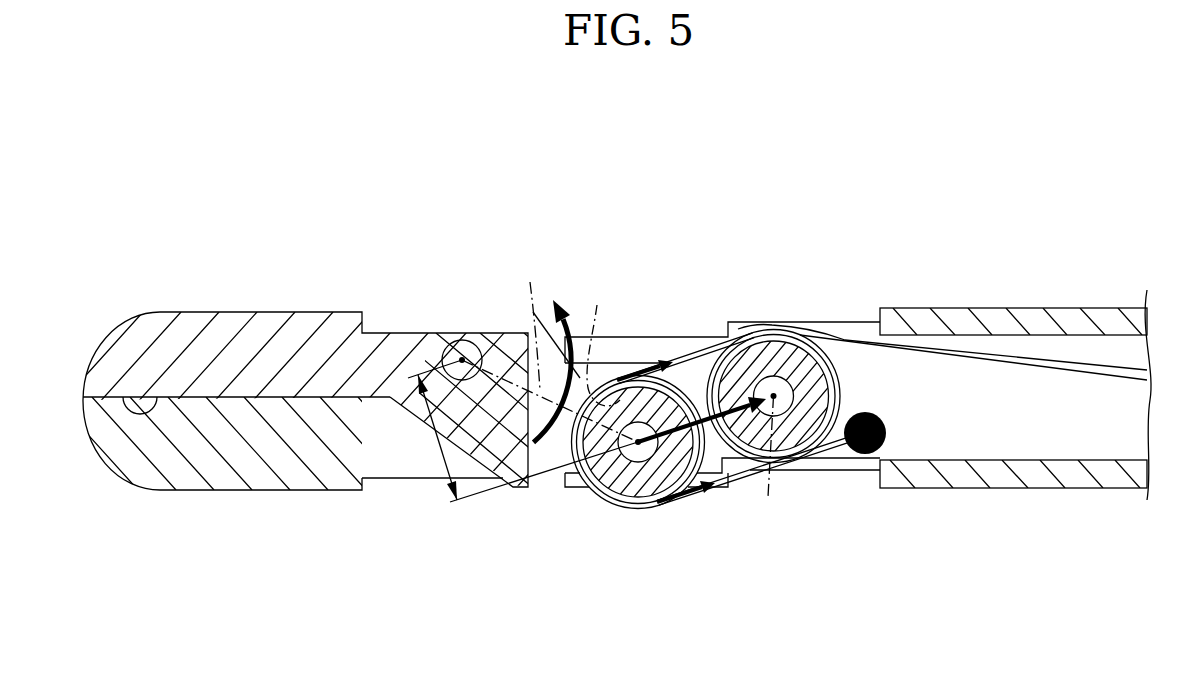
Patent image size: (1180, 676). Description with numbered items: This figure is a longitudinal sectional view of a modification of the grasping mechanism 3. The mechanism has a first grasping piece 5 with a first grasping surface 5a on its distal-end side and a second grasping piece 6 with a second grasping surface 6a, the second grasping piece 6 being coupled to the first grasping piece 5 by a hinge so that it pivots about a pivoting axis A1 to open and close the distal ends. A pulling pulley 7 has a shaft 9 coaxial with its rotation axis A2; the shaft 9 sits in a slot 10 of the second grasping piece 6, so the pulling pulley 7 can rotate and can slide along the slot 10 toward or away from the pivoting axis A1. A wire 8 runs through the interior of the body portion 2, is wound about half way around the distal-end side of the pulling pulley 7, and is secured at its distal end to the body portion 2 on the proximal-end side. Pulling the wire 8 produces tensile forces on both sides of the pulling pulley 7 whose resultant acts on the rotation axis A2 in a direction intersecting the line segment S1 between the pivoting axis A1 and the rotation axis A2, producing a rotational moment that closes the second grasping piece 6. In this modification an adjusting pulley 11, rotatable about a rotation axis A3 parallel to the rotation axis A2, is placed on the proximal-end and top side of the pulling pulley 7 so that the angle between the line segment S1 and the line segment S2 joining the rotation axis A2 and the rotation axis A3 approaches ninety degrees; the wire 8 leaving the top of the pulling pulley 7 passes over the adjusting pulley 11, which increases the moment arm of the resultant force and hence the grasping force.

The grasping mechanism 3 is at (190, 143).
The second grasping piece 6 is at (238, 312).
The second grasping surface 6a is at (156, 395).
The first grasping piece 5 is at (205, 492).
The first grasping surface 5a is at (300, 390).
The pulling pulley 7 is at (578, 467).
The pivoting axis A1 is at (466, 340).
The line segment S1 is at (548, 318).
The slot 10 is at (601, 338).
The shaft 9 is at (641, 460).
The rotation axis A2 is at (635, 450).
The adjusting pulley 11 is at (842, 385).
The line segment S2 is at (772, 465).
The rotation axis A3 is at (780, 405).
The wire 8 is at (853, 322).
The body portion 2 is at (1085, 308).